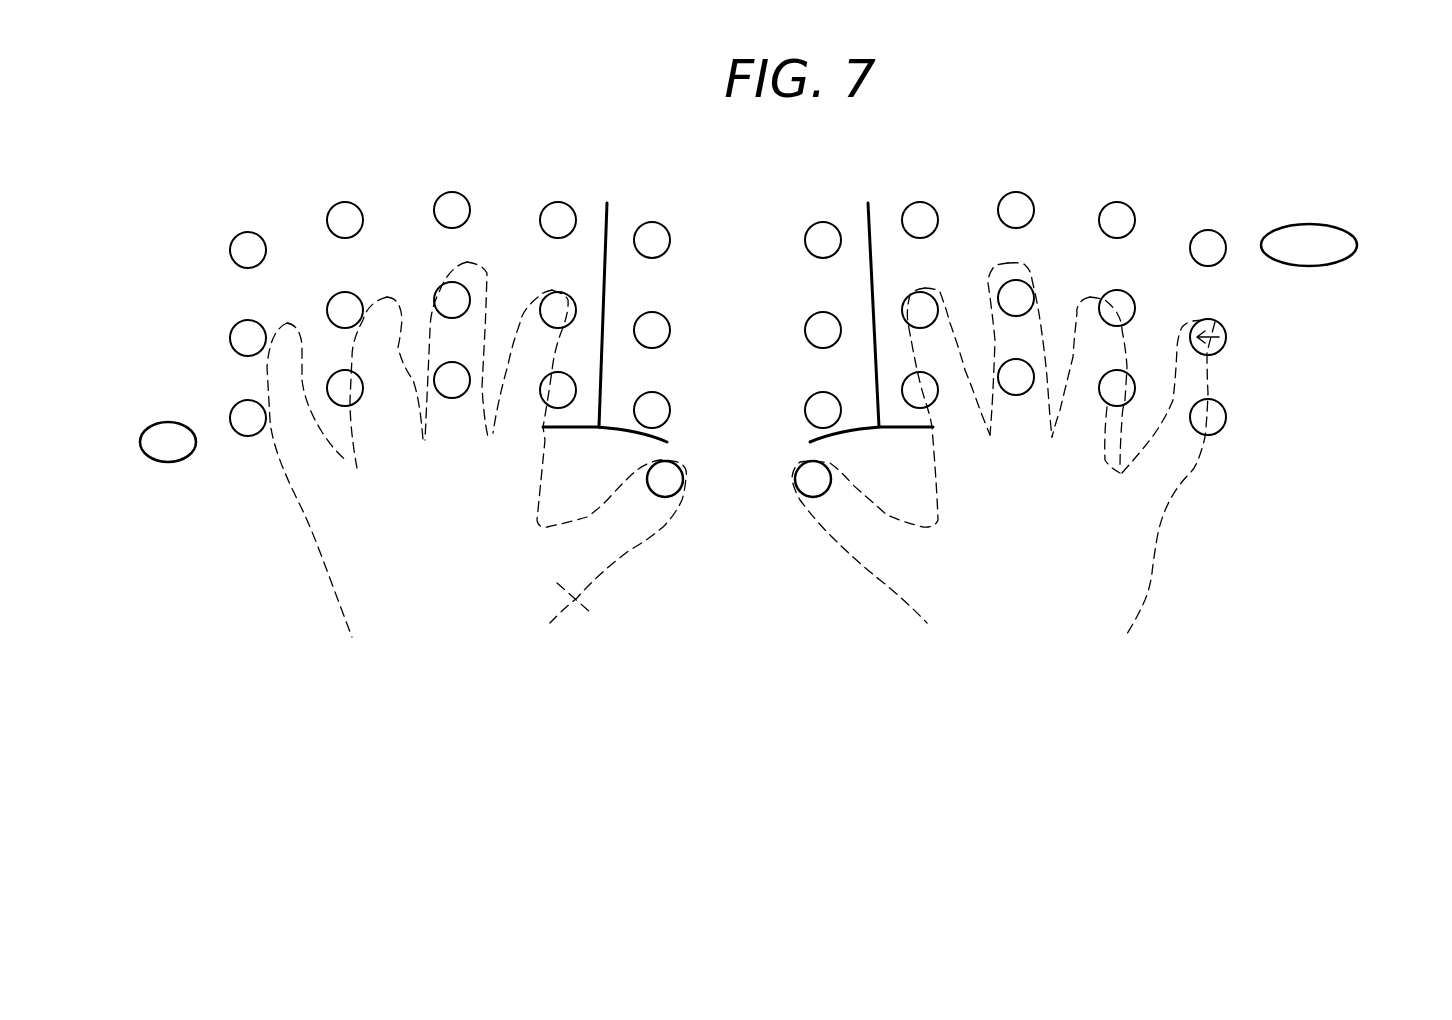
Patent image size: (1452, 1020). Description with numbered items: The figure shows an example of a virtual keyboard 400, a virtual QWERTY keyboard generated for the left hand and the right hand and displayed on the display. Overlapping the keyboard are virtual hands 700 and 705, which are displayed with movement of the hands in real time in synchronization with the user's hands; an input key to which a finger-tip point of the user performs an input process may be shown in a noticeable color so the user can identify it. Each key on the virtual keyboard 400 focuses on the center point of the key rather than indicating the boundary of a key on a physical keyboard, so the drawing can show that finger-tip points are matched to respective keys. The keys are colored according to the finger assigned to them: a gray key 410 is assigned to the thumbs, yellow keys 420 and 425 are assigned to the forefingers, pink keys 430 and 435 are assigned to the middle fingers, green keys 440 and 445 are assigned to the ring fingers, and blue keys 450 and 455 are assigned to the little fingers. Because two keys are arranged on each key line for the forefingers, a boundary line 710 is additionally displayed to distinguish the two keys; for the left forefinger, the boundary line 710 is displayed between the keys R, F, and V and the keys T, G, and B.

The virtual keyboard 400 is at (794, 359).
The gray key 410 is at (739, 521).
The yellow key 420 is at (871, 352).
The yellow key 425 is at (605, 352).
The pink key 430 is at (1009, 341).
The pink key 435 is at (457, 342).
The green key 440 is at (1102, 349).
The green key 445 is at (347, 356).
The blue key 450 is at (1273, 297).
The blue key 455 is at (203, 384).
The virtual hand 700 is at (1025, 454).
The virtual hand 705 is at (476, 477).
The boundary line 710 is at (739, 282).